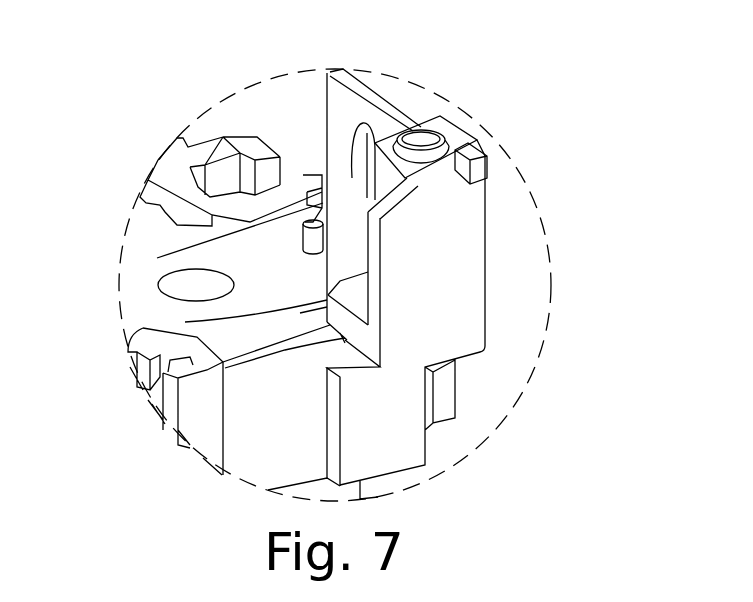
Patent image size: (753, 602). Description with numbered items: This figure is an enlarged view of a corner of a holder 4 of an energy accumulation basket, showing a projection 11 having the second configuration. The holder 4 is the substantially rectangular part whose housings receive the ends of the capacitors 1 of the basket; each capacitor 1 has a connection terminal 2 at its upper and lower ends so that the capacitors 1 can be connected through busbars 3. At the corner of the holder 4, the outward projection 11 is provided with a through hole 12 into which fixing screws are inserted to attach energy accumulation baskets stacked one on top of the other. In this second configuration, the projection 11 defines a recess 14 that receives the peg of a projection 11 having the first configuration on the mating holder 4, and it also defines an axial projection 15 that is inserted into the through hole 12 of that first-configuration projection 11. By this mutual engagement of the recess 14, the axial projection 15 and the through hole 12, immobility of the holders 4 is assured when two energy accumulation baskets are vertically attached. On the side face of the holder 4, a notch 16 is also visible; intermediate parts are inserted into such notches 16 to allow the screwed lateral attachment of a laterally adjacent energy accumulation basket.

The capacitor 1 is at (258, 347).
The connection terminal 2 is at (190, 287).
The busbar 3 is at (340, 113).
The holder 4 is at (521, 440).
The projection 11 is at (437, 277).
The through hole 12 is at (420, 129).
The recess 14 is at (484, 158).
The axial projection 15 is at (422, 128).
The notch 16 is at (233, 148).